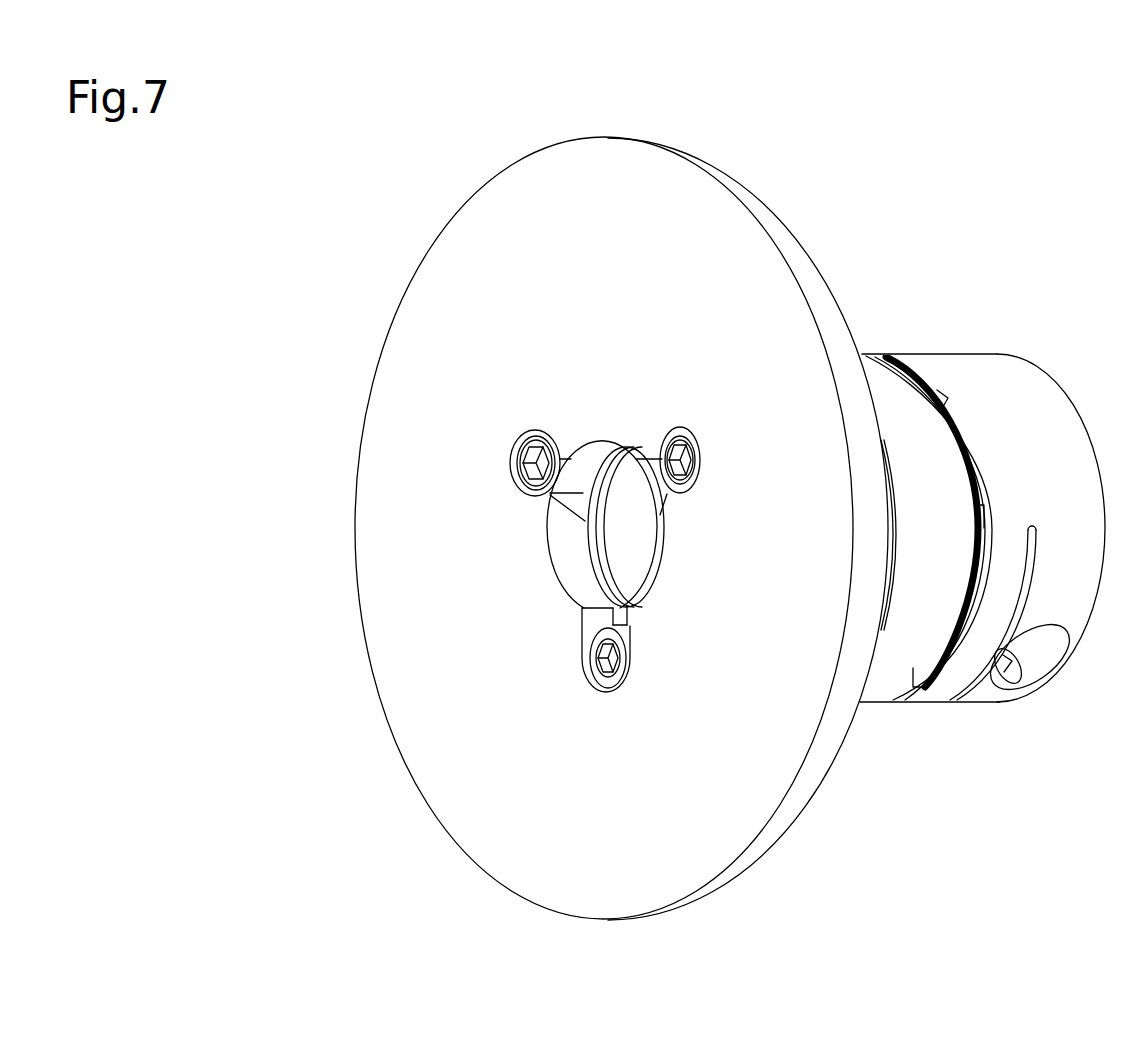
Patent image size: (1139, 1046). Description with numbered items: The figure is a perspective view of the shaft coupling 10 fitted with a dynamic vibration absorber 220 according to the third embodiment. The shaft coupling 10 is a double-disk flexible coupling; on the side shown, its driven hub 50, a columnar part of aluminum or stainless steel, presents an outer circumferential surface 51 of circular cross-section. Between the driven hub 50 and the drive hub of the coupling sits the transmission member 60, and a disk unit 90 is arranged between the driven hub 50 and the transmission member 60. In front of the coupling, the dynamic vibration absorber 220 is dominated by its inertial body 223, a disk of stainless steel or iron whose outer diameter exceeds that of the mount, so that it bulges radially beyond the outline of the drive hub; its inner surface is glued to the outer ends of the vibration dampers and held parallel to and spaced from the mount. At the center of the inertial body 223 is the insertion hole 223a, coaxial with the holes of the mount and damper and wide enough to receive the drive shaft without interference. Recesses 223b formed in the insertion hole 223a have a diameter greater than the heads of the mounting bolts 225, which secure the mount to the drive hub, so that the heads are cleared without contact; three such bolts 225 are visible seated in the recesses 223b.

The dynamic vibration absorber 220 is at (749, 160).
The inertial body 223 is at (782, 235).
The insertion hole 223a is at (572, 574).
The recesses 223b is at (650, 447).
The mounting bolts 225 is at (522, 480).
The shaft coupling 10 is at (985, 340).
The driven hub 50 is at (1046, 386).
The outer circumferential surface 51 is at (1076, 432).
The transmission member 60 is at (900, 382).
The disk unit 90 is at (981, 474).